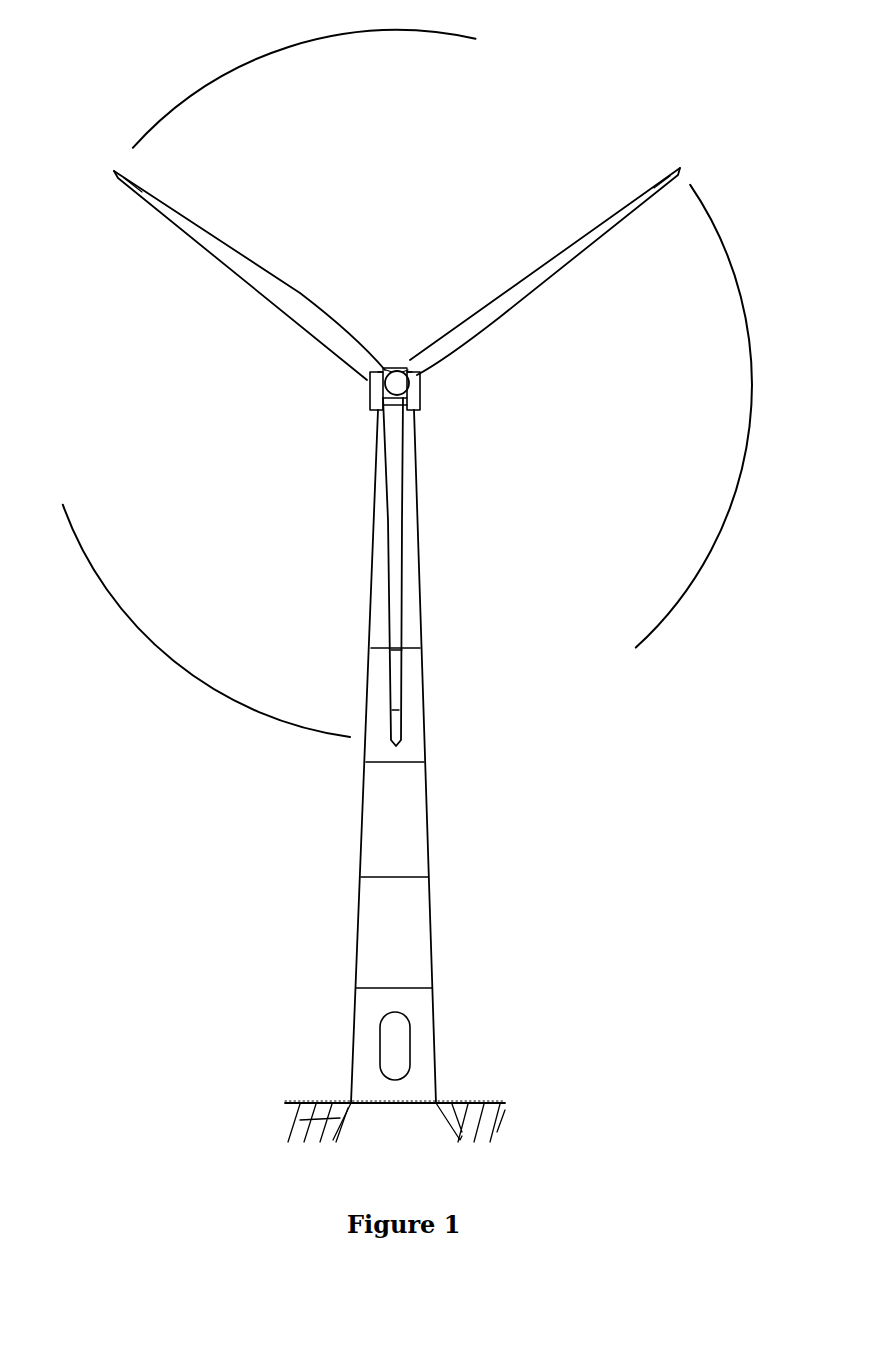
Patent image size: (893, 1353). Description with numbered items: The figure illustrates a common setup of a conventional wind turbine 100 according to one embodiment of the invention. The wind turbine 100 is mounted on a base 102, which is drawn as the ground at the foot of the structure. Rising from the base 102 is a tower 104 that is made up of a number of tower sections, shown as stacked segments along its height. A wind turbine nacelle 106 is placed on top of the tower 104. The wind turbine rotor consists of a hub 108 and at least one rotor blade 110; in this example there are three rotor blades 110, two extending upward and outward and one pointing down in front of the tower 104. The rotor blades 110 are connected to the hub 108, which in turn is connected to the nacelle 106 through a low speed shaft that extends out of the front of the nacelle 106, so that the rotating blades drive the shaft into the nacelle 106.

The wind turbine 100 is at (308, 904).
The base 102 is at (327, 1107).
The tower 104 is at (424, 818).
The wind turbine nacelle 106 is at (424, 398).
The hub 108 is at (372, 403).
The rotor blade 110 is at (397, 620).